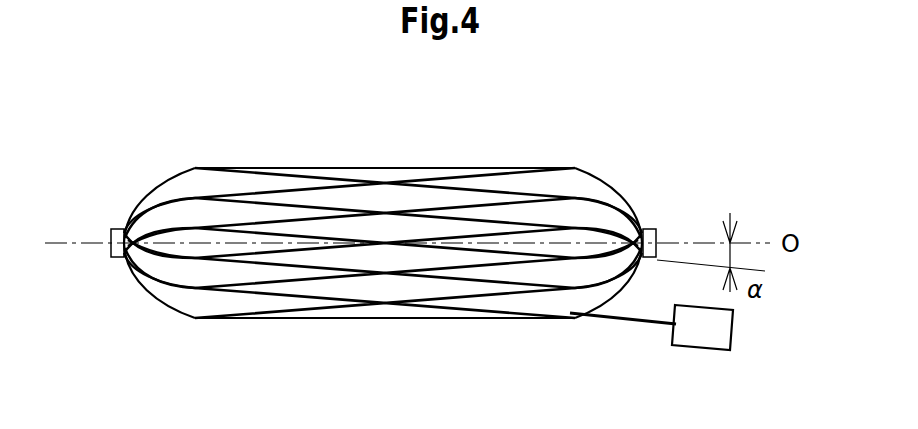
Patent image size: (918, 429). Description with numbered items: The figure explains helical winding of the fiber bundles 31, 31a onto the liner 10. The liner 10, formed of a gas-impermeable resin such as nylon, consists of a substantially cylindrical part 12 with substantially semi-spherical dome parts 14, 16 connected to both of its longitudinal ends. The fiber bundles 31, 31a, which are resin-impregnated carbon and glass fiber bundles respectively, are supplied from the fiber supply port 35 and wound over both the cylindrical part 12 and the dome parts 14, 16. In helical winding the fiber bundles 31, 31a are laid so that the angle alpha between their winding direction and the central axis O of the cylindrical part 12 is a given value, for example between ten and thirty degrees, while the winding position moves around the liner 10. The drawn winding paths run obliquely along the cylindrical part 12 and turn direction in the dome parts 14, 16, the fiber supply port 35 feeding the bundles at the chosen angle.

The liner 10 is at (408, 199).
The cylindrical part 12 is at (257, 167).
The dome part 14 is at (157, 185).
The dome part 16 is at (612, 185).
The fiber bundle 31 is at (621, 362).
The fiber bundle 31a is at (612, 324).
The fiber supply port 35 is at (697, 349).